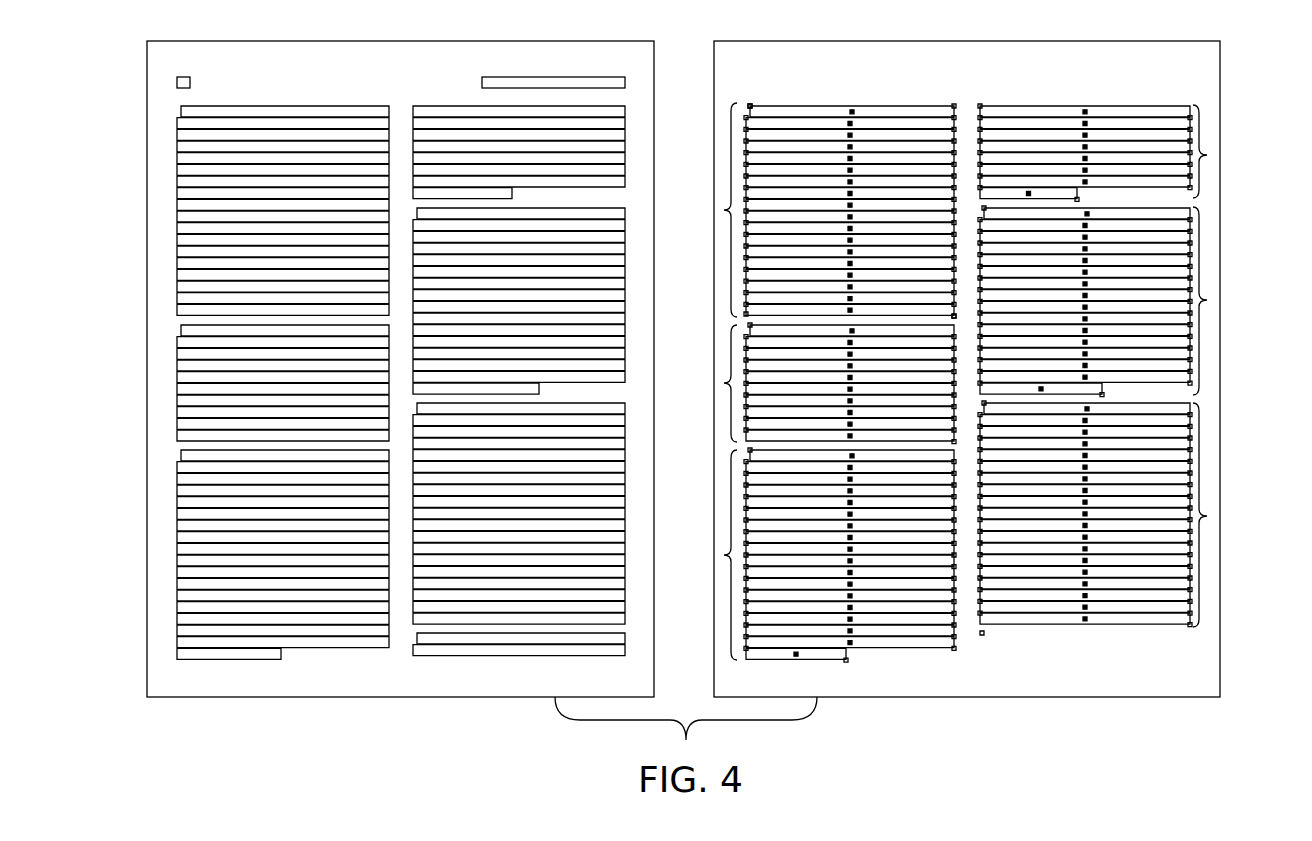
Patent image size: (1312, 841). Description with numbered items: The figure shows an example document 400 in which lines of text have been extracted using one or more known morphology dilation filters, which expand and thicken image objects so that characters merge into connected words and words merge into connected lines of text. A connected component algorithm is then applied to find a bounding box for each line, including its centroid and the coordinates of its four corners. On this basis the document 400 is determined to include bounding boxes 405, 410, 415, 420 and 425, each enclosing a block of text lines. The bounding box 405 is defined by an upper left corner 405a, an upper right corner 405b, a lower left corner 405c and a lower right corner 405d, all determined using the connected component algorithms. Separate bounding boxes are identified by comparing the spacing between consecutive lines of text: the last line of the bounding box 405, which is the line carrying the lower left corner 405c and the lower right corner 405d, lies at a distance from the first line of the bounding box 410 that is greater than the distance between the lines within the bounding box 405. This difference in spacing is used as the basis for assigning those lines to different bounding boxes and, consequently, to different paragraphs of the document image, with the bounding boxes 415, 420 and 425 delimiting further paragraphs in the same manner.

The document 400 is at (234, 43).
The bounding box 405 is at (724, 210).
The upper left corner 405a is at (746, 105).
The upper right corner 405b is at (954, 105).
The lower left corner 405c is at (744, 313).
The lower right corner 405d is at (954, 317).
The bounding box 410 is at (724, 383).
The bounding box 415 is at (724, 555).
The bounding box 420 is at (1207, 300).
The bounding box 425 is at (1207, 516).